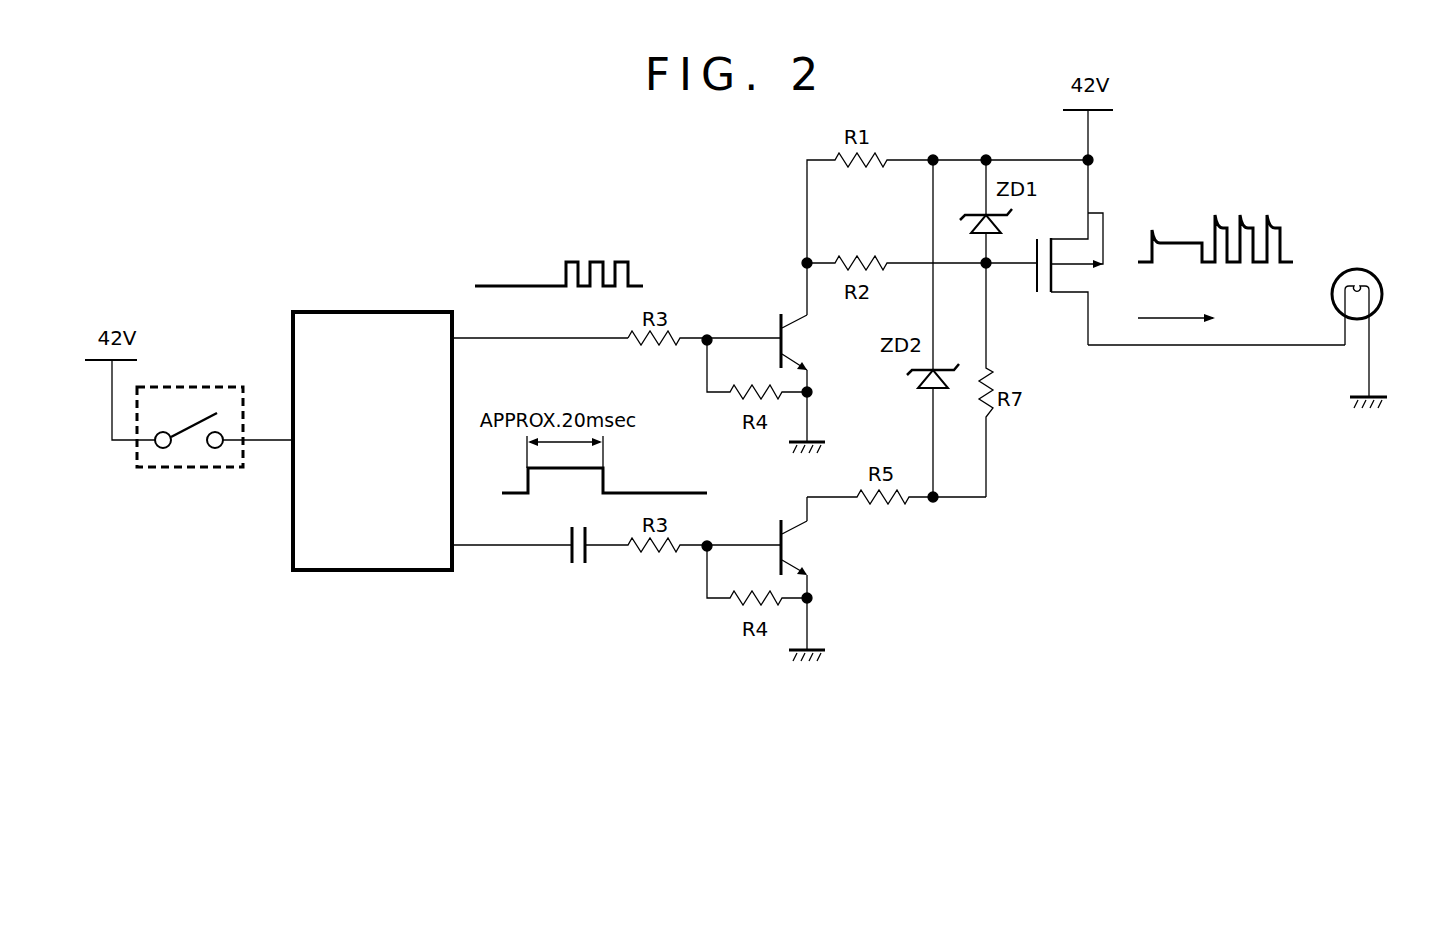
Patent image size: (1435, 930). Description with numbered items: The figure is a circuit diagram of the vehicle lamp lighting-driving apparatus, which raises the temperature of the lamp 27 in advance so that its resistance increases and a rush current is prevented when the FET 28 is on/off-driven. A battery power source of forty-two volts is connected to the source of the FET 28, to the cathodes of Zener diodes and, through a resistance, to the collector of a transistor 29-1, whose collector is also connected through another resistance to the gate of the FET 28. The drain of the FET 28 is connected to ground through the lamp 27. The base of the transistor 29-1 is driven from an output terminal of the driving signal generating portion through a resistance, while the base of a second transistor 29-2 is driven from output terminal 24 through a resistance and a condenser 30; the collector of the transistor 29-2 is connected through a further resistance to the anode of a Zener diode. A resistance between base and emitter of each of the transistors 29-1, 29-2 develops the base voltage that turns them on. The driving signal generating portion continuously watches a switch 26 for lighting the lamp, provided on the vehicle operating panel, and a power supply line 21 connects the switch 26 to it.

The power supply line 21 is at (270, 440).
The output terminal 24 is at (502, 545).
The switch 26 is at (215, 470).
The lamp 27 is at (1382, 287).
The FET 28 is at (1048, 298).
The transistor 29-1 is at (793, 310).
The transistor 29-2 is at (800, 545).
The condenser 30 is at (577, 568).